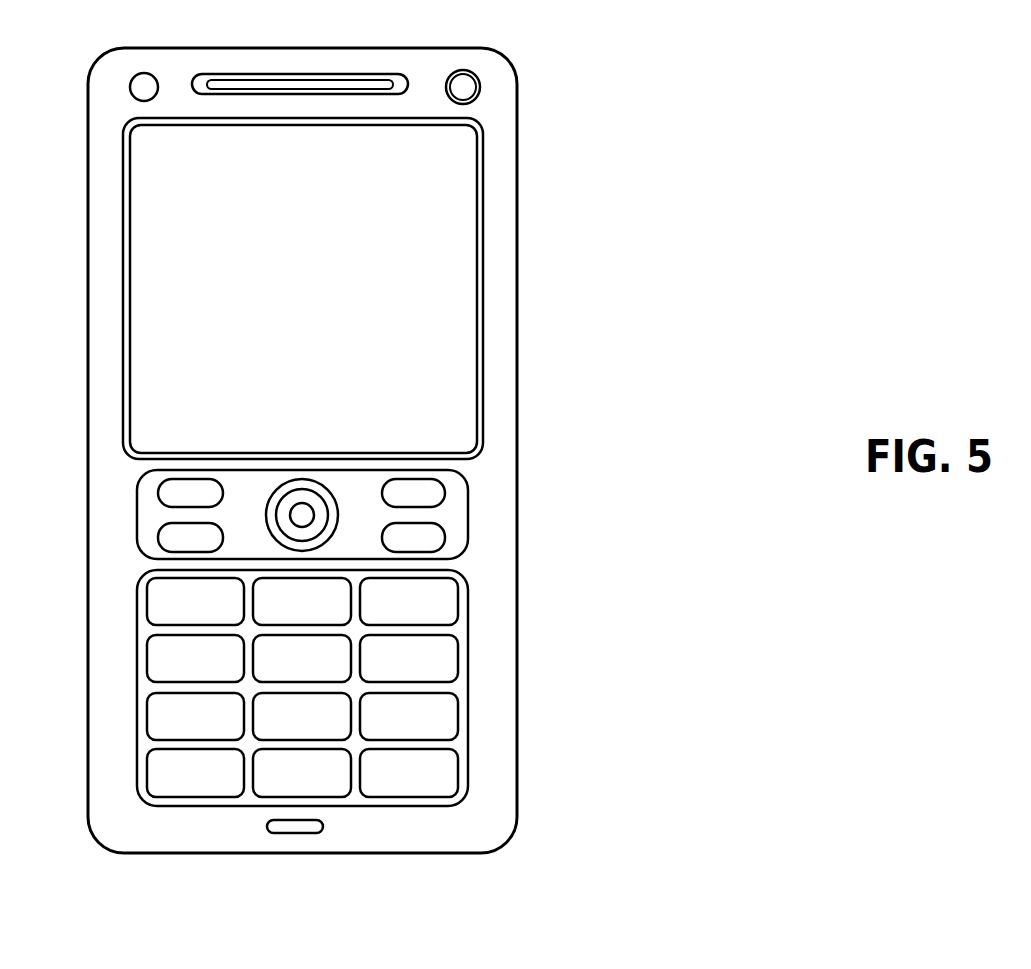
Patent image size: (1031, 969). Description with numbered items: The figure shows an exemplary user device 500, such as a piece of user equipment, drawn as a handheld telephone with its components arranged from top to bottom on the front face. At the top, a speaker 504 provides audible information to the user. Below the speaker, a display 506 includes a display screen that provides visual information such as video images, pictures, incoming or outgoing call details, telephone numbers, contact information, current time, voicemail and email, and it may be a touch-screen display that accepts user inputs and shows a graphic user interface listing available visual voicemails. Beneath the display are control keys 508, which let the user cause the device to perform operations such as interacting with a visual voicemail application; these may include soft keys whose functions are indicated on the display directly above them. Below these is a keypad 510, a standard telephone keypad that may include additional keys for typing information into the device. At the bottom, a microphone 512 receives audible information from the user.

The user device 500 is at (860, 144).
The speaker 504 is at (268, 73).
The display 506 is at (483, 200).
The control keys 508 is at (468, 517).
The keypad 510 is at (468, 688).
The microphone 512 is at (267, 831).